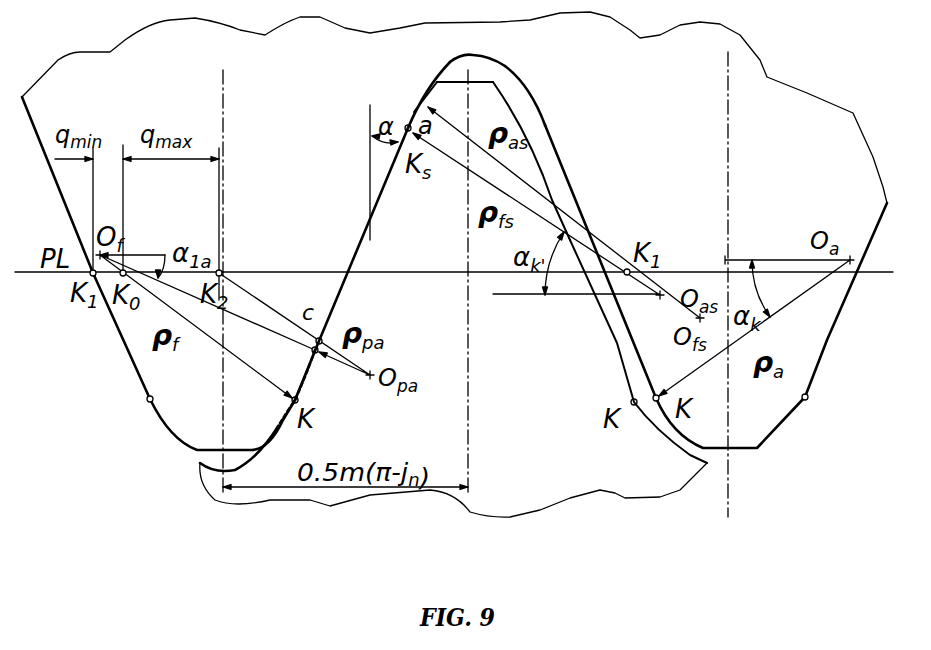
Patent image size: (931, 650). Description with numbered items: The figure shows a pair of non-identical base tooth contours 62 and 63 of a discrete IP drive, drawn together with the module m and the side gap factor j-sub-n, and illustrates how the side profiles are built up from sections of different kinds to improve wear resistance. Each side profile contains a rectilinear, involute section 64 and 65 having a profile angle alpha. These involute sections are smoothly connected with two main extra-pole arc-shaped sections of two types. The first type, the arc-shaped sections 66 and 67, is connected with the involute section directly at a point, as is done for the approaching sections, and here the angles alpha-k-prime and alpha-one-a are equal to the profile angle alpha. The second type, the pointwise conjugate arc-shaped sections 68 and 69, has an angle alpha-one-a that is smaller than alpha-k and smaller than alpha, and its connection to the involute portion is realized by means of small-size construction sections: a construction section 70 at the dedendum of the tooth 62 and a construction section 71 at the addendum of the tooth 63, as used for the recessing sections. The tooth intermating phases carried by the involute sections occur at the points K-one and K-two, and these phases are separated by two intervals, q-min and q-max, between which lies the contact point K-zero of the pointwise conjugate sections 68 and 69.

The base tooth contour 62 is at (490, 74).
The base tooth contour 63 is at (535, 96).
The rectilinear (involute) section 64 is at (542, 158).
The rectilinear (involute) section 65 is at (378, 200).
The main extra-pole arc-shaped section 66 is at (428, 107).
The main extra-pole arc-shaped section 67 is at (428, 97).
The main extra-pole arc-shaped section 68 is at (307, 385).
The main extra-pole arc-shaped section 69 is at (267, 440).
The small-size construction section 70 is at (621, 357).
The small-size construction section 71 is at (305, 368).